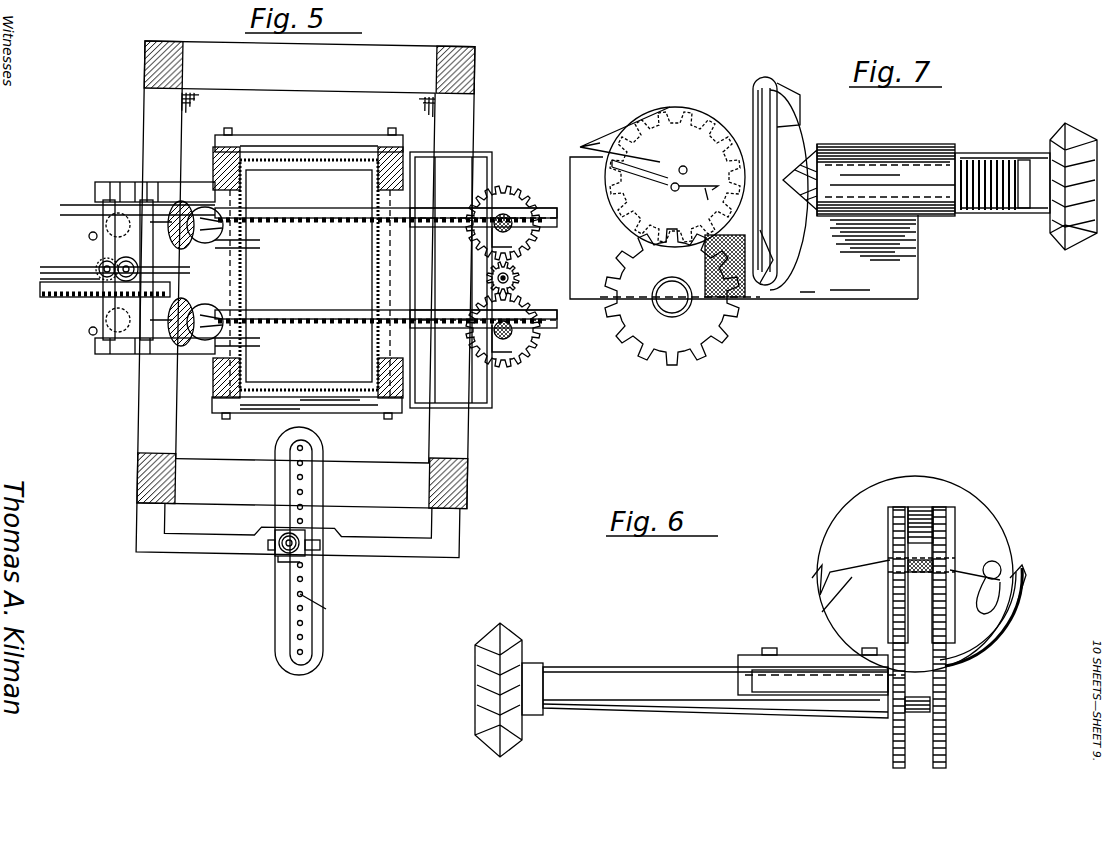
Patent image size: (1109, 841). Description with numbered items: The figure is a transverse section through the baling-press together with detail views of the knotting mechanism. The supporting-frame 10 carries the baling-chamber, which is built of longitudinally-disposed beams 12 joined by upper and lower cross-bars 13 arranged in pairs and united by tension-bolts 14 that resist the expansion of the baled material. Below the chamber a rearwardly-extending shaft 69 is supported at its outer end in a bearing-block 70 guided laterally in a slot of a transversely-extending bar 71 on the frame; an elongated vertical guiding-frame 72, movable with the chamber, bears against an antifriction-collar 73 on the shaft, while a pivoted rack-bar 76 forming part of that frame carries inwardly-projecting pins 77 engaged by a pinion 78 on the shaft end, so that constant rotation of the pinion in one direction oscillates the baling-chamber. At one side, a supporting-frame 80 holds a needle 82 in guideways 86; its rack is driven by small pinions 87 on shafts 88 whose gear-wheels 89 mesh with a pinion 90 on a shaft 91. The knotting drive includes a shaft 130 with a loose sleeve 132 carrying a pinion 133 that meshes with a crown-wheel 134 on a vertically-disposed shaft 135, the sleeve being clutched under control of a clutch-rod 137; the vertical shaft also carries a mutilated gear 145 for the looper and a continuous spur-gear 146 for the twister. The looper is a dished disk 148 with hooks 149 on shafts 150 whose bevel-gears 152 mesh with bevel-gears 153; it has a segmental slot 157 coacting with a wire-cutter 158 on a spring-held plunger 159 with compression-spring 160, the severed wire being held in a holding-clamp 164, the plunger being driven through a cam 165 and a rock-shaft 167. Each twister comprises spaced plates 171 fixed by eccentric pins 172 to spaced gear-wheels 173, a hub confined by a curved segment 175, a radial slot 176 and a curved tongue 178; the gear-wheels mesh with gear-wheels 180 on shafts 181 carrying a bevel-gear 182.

In FIG. 5, the supporting-frame 10 is at (468, 490).
In FIG. 5, the longitudinally-disposed beams 12 is at (213, 152).
In FIG. 5, the cross-bars 13 is at (292, 137).
In FIG. 5, the tension-bolts 14 is at (232, 132).
In FIG. 5, the rearwardly-extending shaft 69 is at (284, 560).
In FIG. 5, the bearing-block 70 is at (278, 530).
In FIG. 5, the transversely-extending bar 71 is at (385, 555).
In FIG. 5, the guiding-frame 72 is at (275, 620).
In FIG. 5, the antifriction-collar 73 is at (278, 560).
In FIG. 5, the rack-bar 76 is at (323, 607).
In FIG. 5, the pins 77 is at (303, 579).
In FIG. 5, the pinion 78 is at (272, 552).
In FIG. 5, the supporting-frame 80 is at (492, 396).
In FIG. 5, the needle 82 is at (386, 306).
In FIG. 5, the guideways 86 is at (556, 340).
In FIG. 5, the small pinions 87 is at (386, 205).
In FIG. 5, the shafts 88 is at (505, 214).
In FIG. 5, the gear-wheels 89 is at (528, 252).
In FIG. 5, the pinion 90 is at (520, 284).
In FIG. 5, the shaft 91 is at (497, 279).
In FIG. 5, the shaft 130 is at (99, 270).
In FIG. 5, the loose sleeve 132 is at (96, 266).
In FIG. 5, the pinion 133 is at (118, 266).
In FIG. 5, the crown-wheel or bevel-gear 134 is at (50, 269).
In FIG. 5, the vertically-disposed shaft 135 is at (110, 220).
In FIG. 5, the clutch-rod 137 is at (120, 258).
In FIG. 5, the mutilated gear 145 is at (40, 286).
In FIG. 5, the continuous spur-gear 146 is at (45, 297).
In FIG. 5, the dished plate or disk 148 is at (182, 205).
In FIG. 7, the dished plate or disk 148 is at (755, 92).
In FIG. 6, the dished plate or disk 148 is at (845, 508).
In FIG. 7, the hooks 149 is at (765, 285).
In FIG. 6, the hooks 149 is at (812, 580).
In FIG. 7, the shafts 150 is at (972, 155).
In FIG. 5, the bevel-gears 152 is at (112, 215).
In FIG. 7, the bevel-gears 152 is at (1055, 132).
In FIG. 5, the bevel-gears 153 is at (90, 234).
In FIG. 7, the segmental slot 157 is at (860, 278).
In FIG. 6, the segmental slot 157 is at (996, 576).
In FIG. 7, the wire-cutter 158 is at (830, 160).
In FIG. 7, the plunger 159 is at (975, 222).
In FIG. 7, the compression-spring 160 is at (1005, 220).
In FIG. 7, the holding-clamp 164 is at (802, 110).
In FIG. 5, the cam 165 is at (100, 305).
In FIG. 5, the rock-shaft 167 is at (130, 185).
In FIG. 5, the spaced plates 171 is at (238, 205).
In FIG. 7, the spaced plates 171 is at (672, 103).
In FIG. 6, the spaced plates 171 is at (892, 510).
In FIG. 7, the pins 172 is at (685, 167).
In FIG. 6, the spaced gear-wheels 173 is at (900, 510).
In FIG. 7, the curved bar or segment 175 is at (744, 228).
In FIG. 7, the slot 176 is at (646, 190).
In FIG. 7, the tongue 178 is at (640, 160).
In FIG. 7, the gear-wheels 180 is at (680, 297).
In FIG. 6, the gear-wheels 180 is at (932, 780).
In FIG. 6, the shafts 181 is at (662, 710).
In FIG. 6, the bevel-gear 182 is at (480, 742).